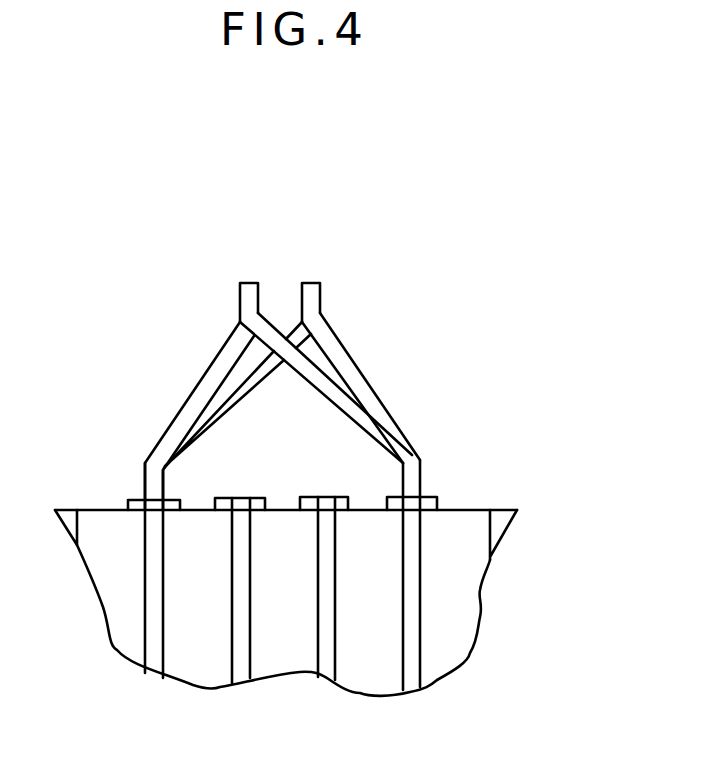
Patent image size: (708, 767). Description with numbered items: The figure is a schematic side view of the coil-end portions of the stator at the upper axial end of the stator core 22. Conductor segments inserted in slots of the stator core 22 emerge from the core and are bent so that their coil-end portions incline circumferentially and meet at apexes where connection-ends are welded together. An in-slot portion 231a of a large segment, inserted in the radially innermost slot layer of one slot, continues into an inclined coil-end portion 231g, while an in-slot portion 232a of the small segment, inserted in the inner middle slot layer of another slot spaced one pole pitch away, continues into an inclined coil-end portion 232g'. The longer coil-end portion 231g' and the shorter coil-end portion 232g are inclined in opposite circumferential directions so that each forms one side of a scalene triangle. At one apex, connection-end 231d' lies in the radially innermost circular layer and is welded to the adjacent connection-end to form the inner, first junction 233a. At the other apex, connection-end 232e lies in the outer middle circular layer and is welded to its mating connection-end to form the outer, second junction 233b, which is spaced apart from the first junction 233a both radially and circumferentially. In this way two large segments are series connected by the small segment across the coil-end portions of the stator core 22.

The stator core 22 is at (457, 628).
The in-slot portion 231a is at (412, 493).
The connection-end 231d' is at (228, 252).
The coil-end portion 231g is at (414, 388).
The longer coil-end portion 231g' is at (249, 294).
The in-slot portion 232a is at (153, 500).
The connection-end 232e is at (313, 283).
The shorter coil-end portion 232g is at (389, 363).
The coil-end portion 232g' is at (180, 393).
The inner junction 233a is at (336, 346).
The outer junction 233b is at (275, 315).